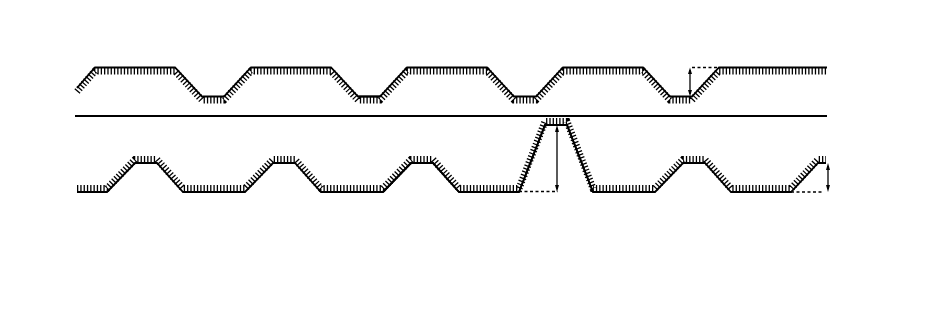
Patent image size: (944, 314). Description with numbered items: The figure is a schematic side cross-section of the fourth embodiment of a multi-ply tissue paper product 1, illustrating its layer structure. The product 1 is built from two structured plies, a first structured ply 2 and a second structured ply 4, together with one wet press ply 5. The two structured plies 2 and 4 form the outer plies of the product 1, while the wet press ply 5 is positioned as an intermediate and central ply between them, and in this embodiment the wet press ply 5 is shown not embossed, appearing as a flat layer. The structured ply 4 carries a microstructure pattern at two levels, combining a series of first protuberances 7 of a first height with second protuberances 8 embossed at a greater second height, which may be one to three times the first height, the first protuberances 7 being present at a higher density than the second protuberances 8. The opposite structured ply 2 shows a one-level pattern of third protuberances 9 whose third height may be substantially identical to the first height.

The multi-ply tissue paper product 1 is at (126, 50).
The first structured ply 2 is at (278, 68).
The second structured ply 4 is at (342, 192).
The wet press ply 5 is at (98, 116).
The first protuberances 7 is at (420, 184).
The second protuberances 8 is at (567, 193).
The third protuberances 9 is at (370, 87).